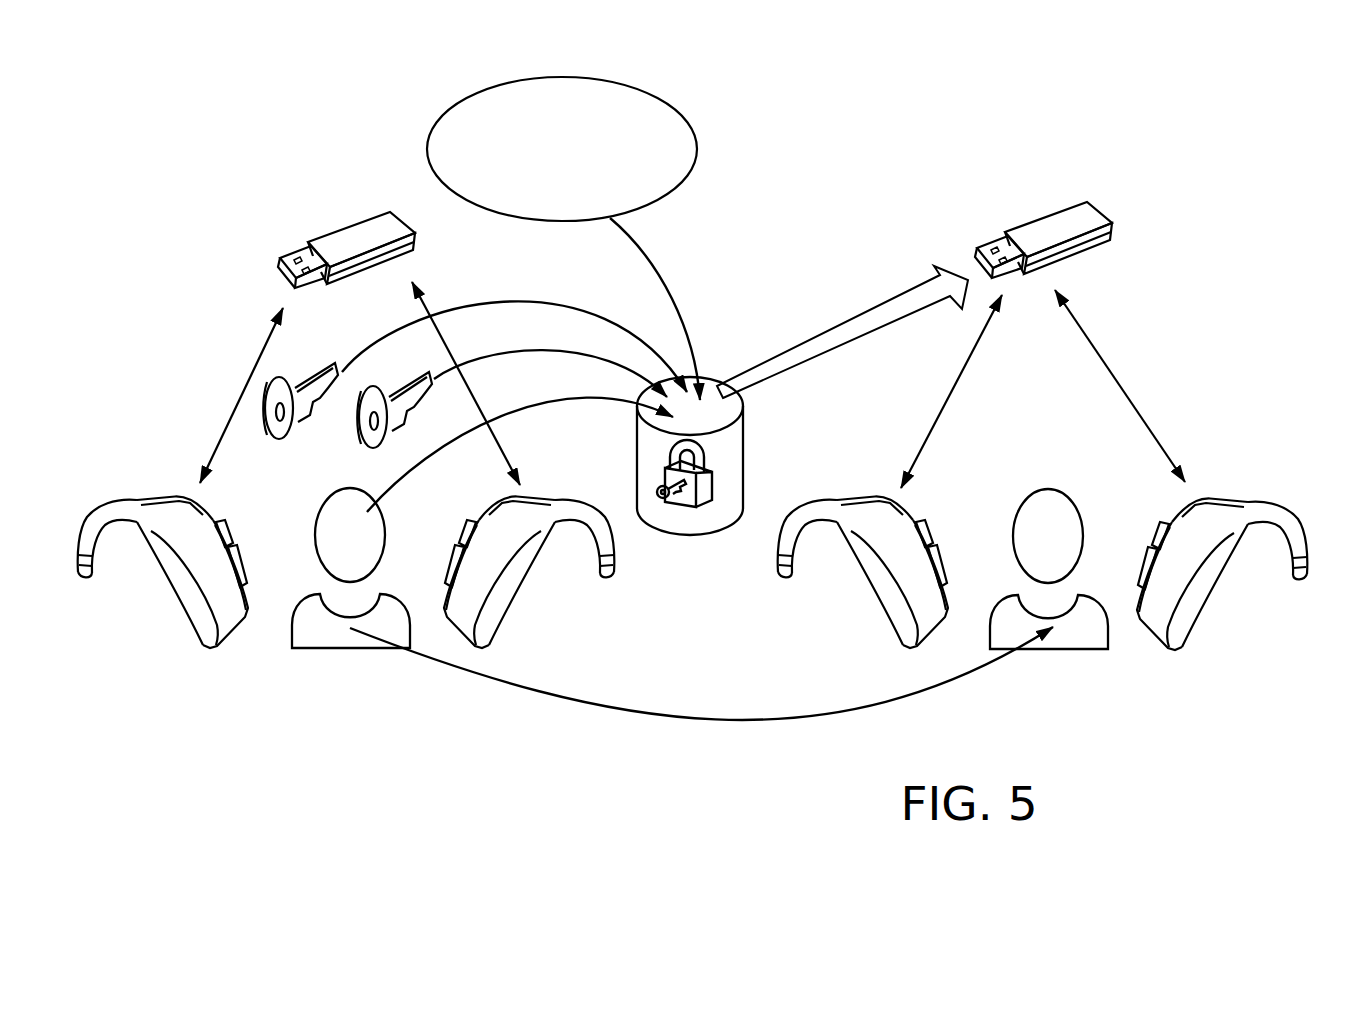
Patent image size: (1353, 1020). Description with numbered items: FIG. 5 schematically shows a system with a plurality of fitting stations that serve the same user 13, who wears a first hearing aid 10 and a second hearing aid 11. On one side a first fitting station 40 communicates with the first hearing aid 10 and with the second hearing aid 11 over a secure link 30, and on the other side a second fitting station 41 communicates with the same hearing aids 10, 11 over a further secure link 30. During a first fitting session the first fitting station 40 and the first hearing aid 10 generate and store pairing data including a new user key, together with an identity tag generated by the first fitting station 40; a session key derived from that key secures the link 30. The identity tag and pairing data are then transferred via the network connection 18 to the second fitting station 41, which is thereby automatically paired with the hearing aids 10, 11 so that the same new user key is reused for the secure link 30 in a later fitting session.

The first hearing aid 10 is at (185, 570).
The second hearing aid 11 is at (510, 577).
The user 13 is at (347, 635).
The network connection 18 is at (663, 282).
The secure link 30 is at (247, 372).
The first fitting station 40 is at (372, 218).
The second fitting station 41 is at (1090, 210).